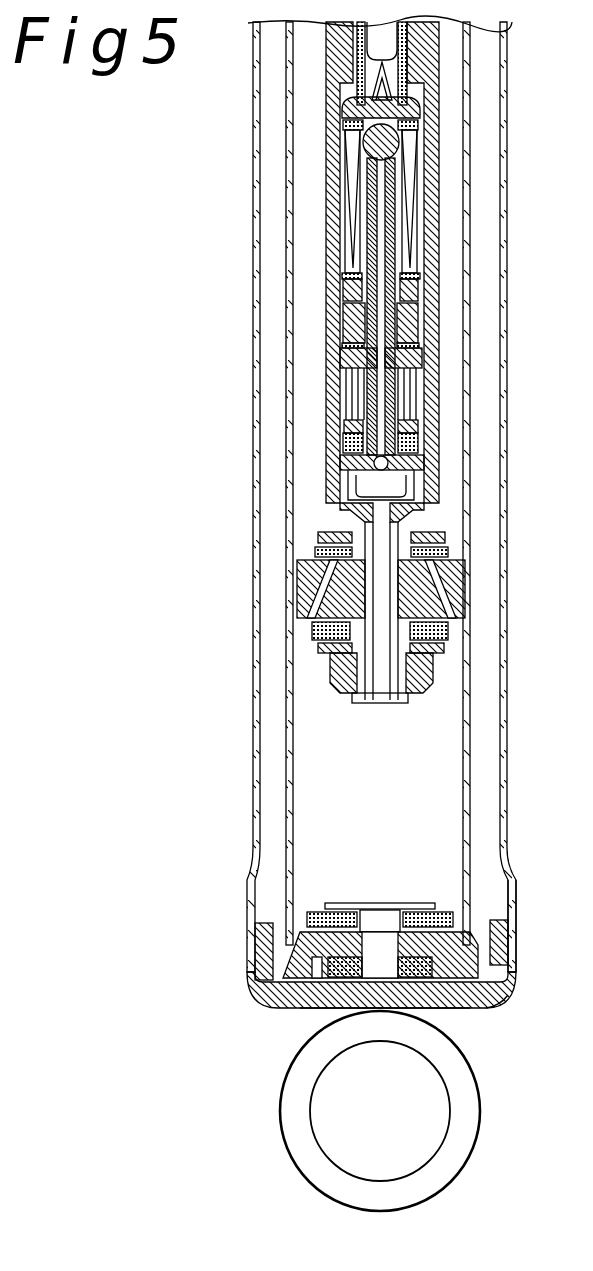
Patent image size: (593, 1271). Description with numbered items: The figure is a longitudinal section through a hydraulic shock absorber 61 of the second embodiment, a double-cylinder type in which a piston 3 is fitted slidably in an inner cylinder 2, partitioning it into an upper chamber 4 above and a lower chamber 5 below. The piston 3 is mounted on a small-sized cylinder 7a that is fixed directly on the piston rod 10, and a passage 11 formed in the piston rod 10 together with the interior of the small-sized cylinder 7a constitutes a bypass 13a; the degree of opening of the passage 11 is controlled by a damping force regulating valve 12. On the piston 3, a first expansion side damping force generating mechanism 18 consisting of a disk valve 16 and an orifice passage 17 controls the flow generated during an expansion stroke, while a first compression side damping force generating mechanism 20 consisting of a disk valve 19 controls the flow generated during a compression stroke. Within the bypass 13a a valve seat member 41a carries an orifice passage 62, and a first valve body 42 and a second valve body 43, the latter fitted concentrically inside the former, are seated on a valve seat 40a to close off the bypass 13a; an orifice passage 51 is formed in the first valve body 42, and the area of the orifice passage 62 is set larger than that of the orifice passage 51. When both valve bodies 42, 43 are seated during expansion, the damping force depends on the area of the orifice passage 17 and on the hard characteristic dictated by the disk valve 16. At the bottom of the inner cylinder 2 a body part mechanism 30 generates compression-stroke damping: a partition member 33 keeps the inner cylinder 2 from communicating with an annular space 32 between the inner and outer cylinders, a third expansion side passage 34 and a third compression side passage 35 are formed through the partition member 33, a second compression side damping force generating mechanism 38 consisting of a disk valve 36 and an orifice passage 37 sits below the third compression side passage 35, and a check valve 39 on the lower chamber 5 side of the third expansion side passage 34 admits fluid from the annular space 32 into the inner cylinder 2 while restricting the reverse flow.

The hydraulic shock absorber 61 is at (181, 232).
The inner cylinder 2 is at (470, 775).
The piston 3 is at (465, 600).
The upper chamber 4 is at (452, 348).
The lower chamber 5 is at (445, 812).
The small-sized cylinder 7a is at (420, 520).
The piston rod 10 is at (437, 292).
The passage 11 is at (432, 410).
The damping force regulating valve 12 is at (428, 210).
The bypass 13a is at (340, 488).
The disk valve 16 is at (450, 656).
The orifice passage 17 is at (450, 623).
The first expansion side damping force generating mechanism 18 is at (453, 648).
The disk valve 19 is at (320, 538).
The first compression side damping force generating mechanism 20 is at (306, 553).
The body part mechanism 30 is at (313, 898).
The annular space 32 is at (487, 862).
The partition member 33 is at (283, 977).
The third expansion side passage 34 is at (450, 946).
The third compression side passage 35 is at (490, 982).
The disk valve 36 is at (470, 1010).
The orifice passage 37 is at (492, 1002).
The second compression side damping force generating mechanism 38 is at (452, 1008).
The check valve 39 is at (453, 903).
The valve seat 40a is at (340, 462).
The valve seat member 41a is at (338, 458).
The first valve body 42 is at (432, 440).
The second valve body 43 is at (340, 425).
The orifice passage 51 is at (430, 462).
The orifice passage 62 is at (425, 482).